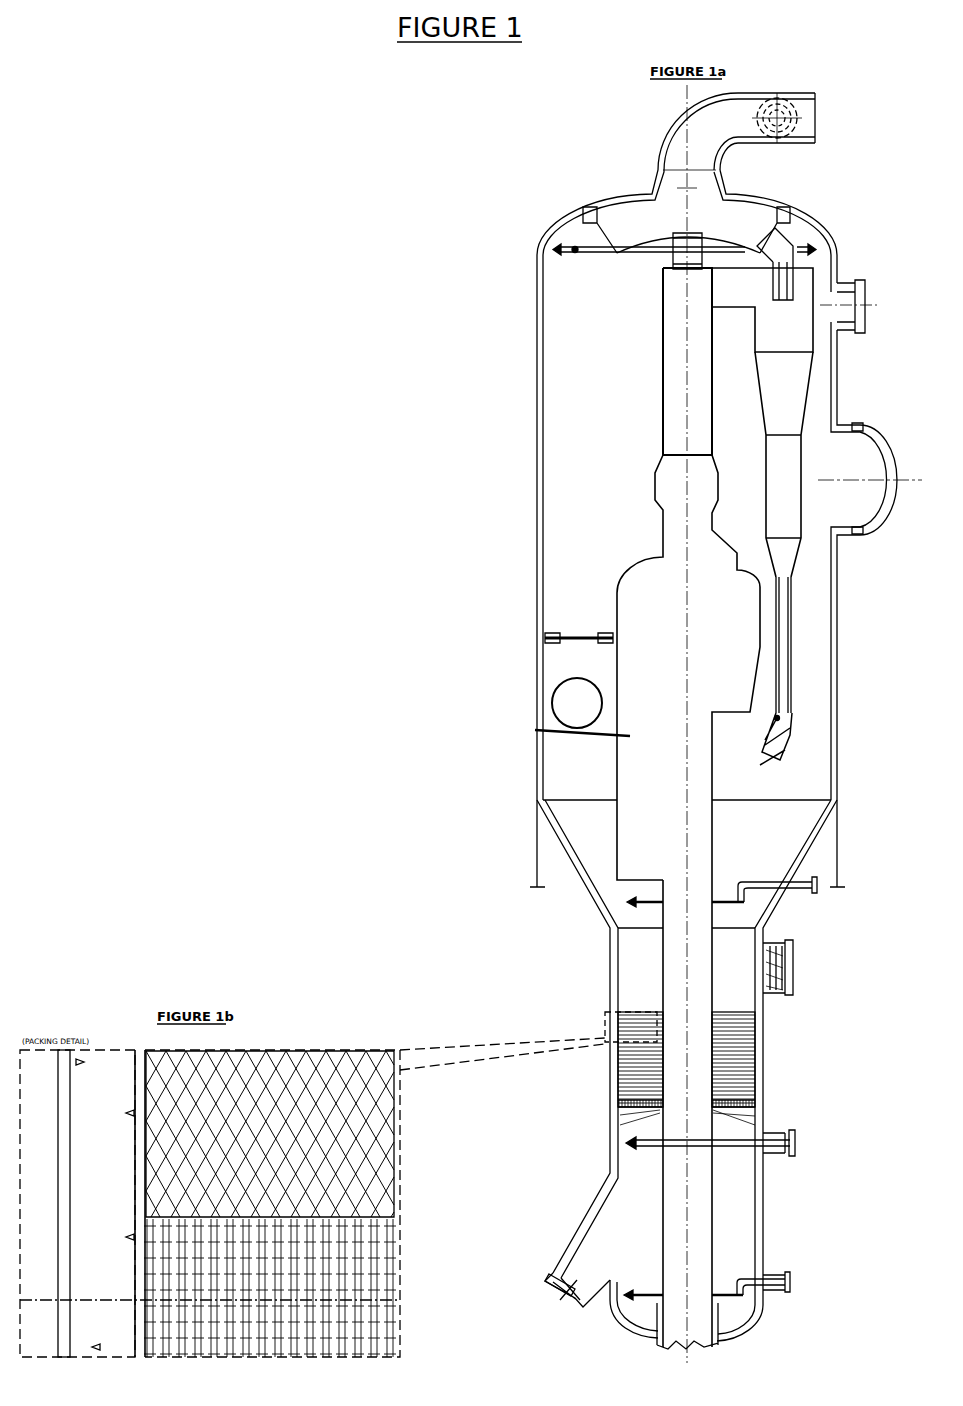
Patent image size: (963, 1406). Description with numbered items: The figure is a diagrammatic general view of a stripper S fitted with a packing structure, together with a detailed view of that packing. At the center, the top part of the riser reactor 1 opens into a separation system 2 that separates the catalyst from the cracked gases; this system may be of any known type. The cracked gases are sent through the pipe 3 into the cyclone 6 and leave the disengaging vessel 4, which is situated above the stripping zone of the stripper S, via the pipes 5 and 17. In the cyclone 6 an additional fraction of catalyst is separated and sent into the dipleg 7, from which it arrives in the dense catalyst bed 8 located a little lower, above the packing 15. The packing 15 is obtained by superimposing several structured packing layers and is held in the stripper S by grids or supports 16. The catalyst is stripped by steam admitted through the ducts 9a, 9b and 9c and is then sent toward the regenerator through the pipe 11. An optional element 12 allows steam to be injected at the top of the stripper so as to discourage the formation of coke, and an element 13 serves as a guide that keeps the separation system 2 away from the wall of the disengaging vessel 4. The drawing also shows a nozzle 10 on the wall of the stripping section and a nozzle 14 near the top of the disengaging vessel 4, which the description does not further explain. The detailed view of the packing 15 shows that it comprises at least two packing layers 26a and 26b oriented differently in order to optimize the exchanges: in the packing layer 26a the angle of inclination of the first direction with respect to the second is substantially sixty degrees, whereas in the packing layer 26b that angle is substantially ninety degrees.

In FIG. 1A, the riser reactor 1 is at (698, 1325).
In FIG. 1A, the separation system 2 is at (657, 768).
In FIG. 1A, the pipe 3 is at (673, 333).
In FIG. 1A, the disengaging vessel 4 is at (537, 480).
In FIG. 1A, the pipe 5 is at (783, 247).
In FIG. 1A, the cyclone 6 is at (805, 303).
In FIG. 1A, the dipleg 7 is at (787, 612).
In FIG. 1A, the dense catalyst bed 8 is at (787, 825).
In FIG. 1A, the duct 9a is at (817, 887).
In FIG. 1A, the duct 9b is at (795, 1143).
In FIG. 1A, the duct 9c is at (786, 1282).
In FIG. 1A, the side nozzle 10 is at (747, 968).
In FIG. 1A, the pipe 11 is at (587, 1268).
In FIG. 1A, the optional element 12 is at (573, 248).
In FIG. 1A, the guide 13 is at (573, 633).
In FIG. 1A, the top side nozzle 14 is at (845, 300).
In FIG. 1A, the packing 15 is at (410, 1033).
In FIG. 1A, the grids or supports 16 is at (610, 1108).
In FIG. 1A, the pipe 17 is at (815, 118).
In FIG. 1A, the stripper S is at (579, 947).
In FIG. 1B, the packing layer 26a is at (373, 1157).
In FIG. 1B, the packing layer 26b is at (345, 1272).